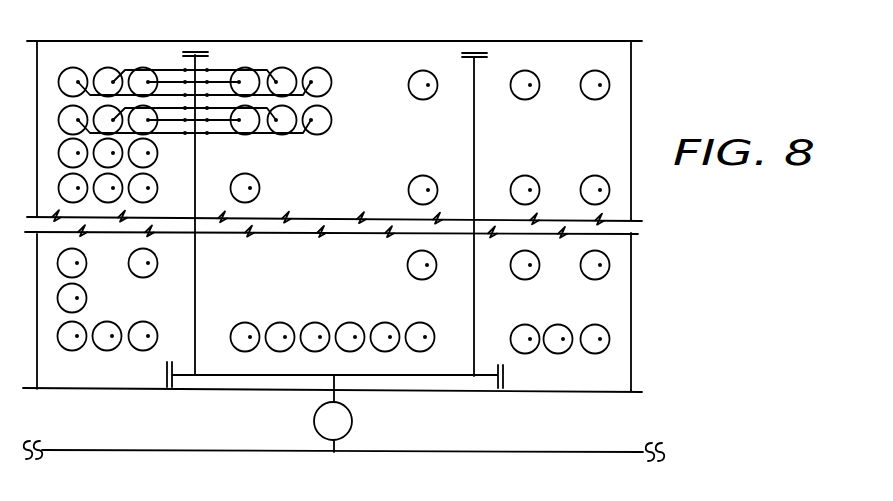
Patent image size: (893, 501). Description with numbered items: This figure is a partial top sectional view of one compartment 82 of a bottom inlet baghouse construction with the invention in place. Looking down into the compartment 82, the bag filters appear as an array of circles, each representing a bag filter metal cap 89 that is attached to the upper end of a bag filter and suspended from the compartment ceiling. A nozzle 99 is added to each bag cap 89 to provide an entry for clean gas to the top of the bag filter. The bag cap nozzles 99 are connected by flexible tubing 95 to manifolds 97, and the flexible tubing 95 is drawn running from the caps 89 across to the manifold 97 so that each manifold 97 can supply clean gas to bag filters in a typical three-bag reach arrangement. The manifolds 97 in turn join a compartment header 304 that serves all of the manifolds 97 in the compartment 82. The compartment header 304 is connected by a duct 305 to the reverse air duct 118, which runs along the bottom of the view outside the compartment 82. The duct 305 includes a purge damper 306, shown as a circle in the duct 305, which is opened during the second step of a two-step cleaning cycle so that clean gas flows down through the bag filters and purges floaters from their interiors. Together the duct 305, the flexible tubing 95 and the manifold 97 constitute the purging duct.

The compartment 82 is at (360, 40).
The bag filter metal cap 89 is at (255, 180).
The flexible tubing 95 is at (170, 134).
The manifold 97 is at (475, 165).
The nozzle 99 is at (78, 298).
The reverse air duct 118 is at (212, 453).
The compartment header 304 is at (370, 373).
The duct 305 is at (327, 446).
The purge damper 306 is at (352, 421).